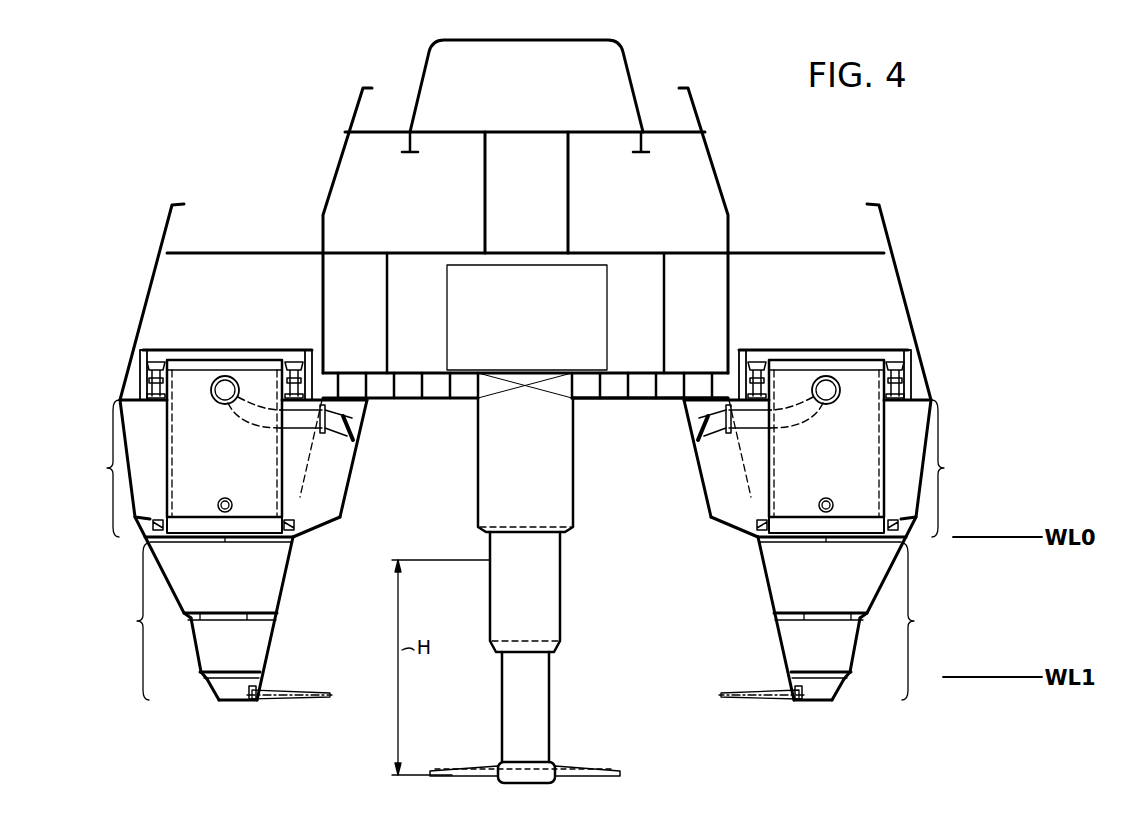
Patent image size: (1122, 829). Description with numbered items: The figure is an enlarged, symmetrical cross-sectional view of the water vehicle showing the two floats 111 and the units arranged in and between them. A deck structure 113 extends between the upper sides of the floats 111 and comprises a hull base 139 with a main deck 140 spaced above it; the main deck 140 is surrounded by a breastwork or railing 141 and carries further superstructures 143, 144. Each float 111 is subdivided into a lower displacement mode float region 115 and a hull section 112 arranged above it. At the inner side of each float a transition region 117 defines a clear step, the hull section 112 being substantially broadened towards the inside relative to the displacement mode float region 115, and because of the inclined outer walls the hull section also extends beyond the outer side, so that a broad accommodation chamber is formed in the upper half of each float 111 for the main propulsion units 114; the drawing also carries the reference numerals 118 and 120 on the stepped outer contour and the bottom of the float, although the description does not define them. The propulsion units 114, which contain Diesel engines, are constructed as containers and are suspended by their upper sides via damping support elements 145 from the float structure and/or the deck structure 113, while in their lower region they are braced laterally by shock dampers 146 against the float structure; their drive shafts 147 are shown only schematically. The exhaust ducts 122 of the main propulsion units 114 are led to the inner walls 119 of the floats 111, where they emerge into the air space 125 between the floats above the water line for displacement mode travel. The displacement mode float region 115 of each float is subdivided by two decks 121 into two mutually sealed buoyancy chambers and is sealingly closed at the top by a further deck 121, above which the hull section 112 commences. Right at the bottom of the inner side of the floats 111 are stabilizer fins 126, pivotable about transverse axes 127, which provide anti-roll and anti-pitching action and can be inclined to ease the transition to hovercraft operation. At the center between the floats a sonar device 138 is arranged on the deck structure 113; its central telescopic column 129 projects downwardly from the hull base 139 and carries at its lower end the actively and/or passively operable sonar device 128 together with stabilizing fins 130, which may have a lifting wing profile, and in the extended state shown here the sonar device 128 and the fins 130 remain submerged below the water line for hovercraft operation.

The float 111 is at (300, 575).
The hull section 112 is at (523, 468).
The deck structure 113 is at (336, 309).
The main propulsion unit 114 is at (215, 360).
The displacement mode float region 115 is at (528, 618).
The transition region 117 is at (320, 528).
The step edges 118 is at (138, 530).
The inner wall 119 is at (352, 470).
The bottom plate 120 is at (240, 700).
The deck 121 is at (218, 542).
The exhaust duct 122 is at (312, 416).
The air space 125 is at (610, 443).
The stabilizer fin 126 is at (292, 690).
The transverse axis 127 is at (333, 698).
The sonar device 128 is at (548, 770).
The central telescopic column 129 is at (560, 585).
The stabilizing fin 130 is at (464, 770).
The sonar device 138 is at (510, 321).
The hull base 139 is at (418, 400).
The main deck 140 is at (803, 253).
The breastwork or railing 141 is at (166, 222).
The superstructure 143 is at (510, 196).
The superstructure 144 is at (510, 96).
The damping support element 145 is at (158, 362).
The shock damper 146 is at (156, 519).
The drive shaft 147 is at (226, 498).